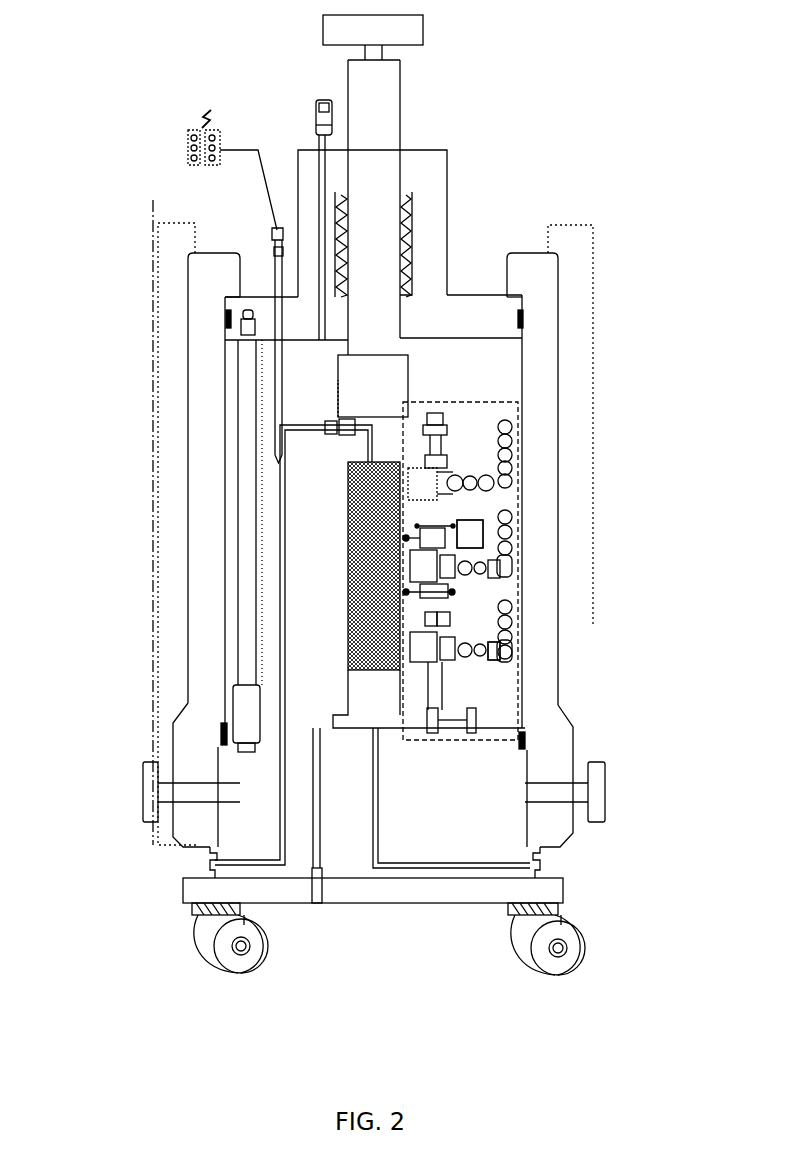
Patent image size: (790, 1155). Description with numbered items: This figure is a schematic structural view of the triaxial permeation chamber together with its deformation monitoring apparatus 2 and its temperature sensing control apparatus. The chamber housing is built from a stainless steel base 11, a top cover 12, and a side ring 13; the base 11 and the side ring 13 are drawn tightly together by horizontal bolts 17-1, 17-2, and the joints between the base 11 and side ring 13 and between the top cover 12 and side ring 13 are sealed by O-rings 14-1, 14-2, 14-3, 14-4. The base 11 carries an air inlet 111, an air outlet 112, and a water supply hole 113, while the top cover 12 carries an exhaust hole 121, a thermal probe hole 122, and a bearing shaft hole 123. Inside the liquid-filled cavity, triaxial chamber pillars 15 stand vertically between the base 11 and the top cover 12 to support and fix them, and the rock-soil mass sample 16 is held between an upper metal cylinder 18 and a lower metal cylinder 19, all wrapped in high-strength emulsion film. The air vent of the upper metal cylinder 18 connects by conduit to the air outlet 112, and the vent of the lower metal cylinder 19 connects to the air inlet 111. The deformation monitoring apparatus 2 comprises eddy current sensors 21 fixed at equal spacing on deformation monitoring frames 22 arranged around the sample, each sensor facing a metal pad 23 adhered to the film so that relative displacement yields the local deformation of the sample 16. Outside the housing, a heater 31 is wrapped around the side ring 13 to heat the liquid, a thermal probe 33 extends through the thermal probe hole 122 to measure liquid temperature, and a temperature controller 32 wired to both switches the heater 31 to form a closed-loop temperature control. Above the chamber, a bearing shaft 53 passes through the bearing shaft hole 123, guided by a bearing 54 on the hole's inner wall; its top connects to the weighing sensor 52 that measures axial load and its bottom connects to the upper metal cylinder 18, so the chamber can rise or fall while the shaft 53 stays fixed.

The deformation monitoring apparatus 2 is at (522, 580).
The base 11 is at (418, 776).
The top cover 12 is at (432, 488).
The side ring 13 is at (414, 479).
The O-ring 14-1 is at (477, 749).
The O-ring 14-2 is at (480, 341).
The O-ring 14-3 is at (154, 239).
The O-ring 14-4 is at (151, 654).
The triaxial chamber pillar 15 is at (180, 523).
The rock-soil mass sample 16 is at (355, 557).
The bolt 17-1 is at (141, 810).
The bolt 17-2 is at (665, 800).
The upper metal cylinder 18 is at (210, 306).
The lower metal cylinder 19 is at (180, 726).
The eddy current sensor 21 is at (457, 495).
The deformation monitoring frame 22 is at (428, 714).
The metal pad 23 is at (576, 689).
The heater 31 is at (335, 522).
The temperature controller 32 is at (177, 134).
The thermal probe 33 is at (175, 337).
The weighing sensor 52 is at (392, 35).
The bearing shaft 53 is at (440, 138).
The bearing 54 is at (418, 238).
The air inlet 111 is at (542, 865).
The air outlet 112 is at (205, 862).
The water supply hole 113 is at (323, 880).
The exhaust hole 121 is at (267, 177).
The thermal probe hole 122 is at (229, 318).
The bearing shaft hole 123 is at (404, 200).